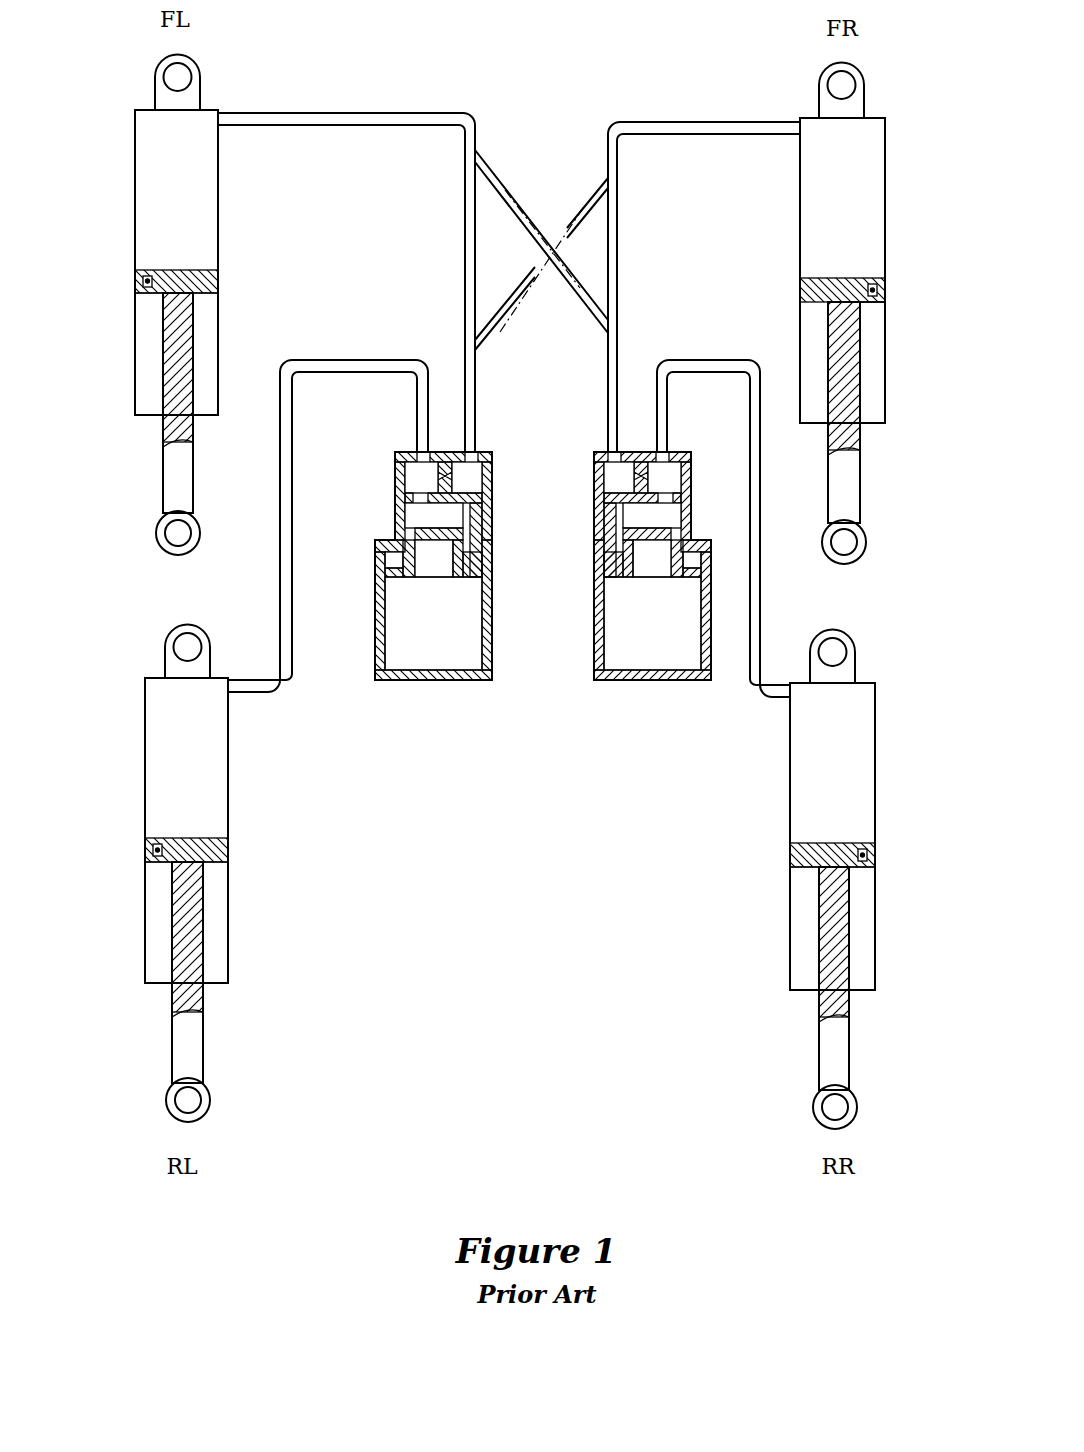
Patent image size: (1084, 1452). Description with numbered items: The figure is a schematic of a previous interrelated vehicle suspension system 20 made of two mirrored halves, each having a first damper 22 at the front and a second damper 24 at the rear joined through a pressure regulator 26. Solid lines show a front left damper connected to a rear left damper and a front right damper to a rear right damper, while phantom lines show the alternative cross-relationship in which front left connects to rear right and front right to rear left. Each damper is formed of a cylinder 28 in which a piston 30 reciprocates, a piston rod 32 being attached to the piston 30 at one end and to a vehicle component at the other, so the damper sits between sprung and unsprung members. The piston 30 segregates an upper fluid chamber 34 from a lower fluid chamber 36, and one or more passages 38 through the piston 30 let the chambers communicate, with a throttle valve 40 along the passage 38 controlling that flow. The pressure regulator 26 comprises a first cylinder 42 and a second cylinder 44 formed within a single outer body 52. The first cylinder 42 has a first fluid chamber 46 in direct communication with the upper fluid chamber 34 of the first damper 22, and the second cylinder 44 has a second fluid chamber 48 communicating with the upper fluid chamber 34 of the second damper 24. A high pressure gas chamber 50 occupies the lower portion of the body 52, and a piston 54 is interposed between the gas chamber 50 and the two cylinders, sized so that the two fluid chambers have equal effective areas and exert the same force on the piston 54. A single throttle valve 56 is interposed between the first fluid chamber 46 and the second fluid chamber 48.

The suspension system 20 is at (610, 75).
The first damper 22 is at (221, 104).
The second damper 24 is at (226, 674).
The pressure regulator 26 is at (411, 694).
The cylinder 28 is at (146, 108).
The piston 30 is at (193, 277).
The piston rod 32 is at (195, 492).
The upper fluid chamber 34 is at (148, 182).
The lower fluid chamber 36 is at (212, 348).
The passage 38 is at (148, 278).
The throttle valve 40 is at (148, 293).
The first cylinder 42 is at (493, 522).
The second cylinder 44 is at (393, 513).
The first fluid chamber 46 is at (590, 472).
The second fluid chamber 48 is at (418, 477).
The high pressure gas chamber 50 is at (470, 628).
The body 52 is at (375, 647).
The piston 54 is at (408, 584).
The throttle valve 56 is at (447, 450).